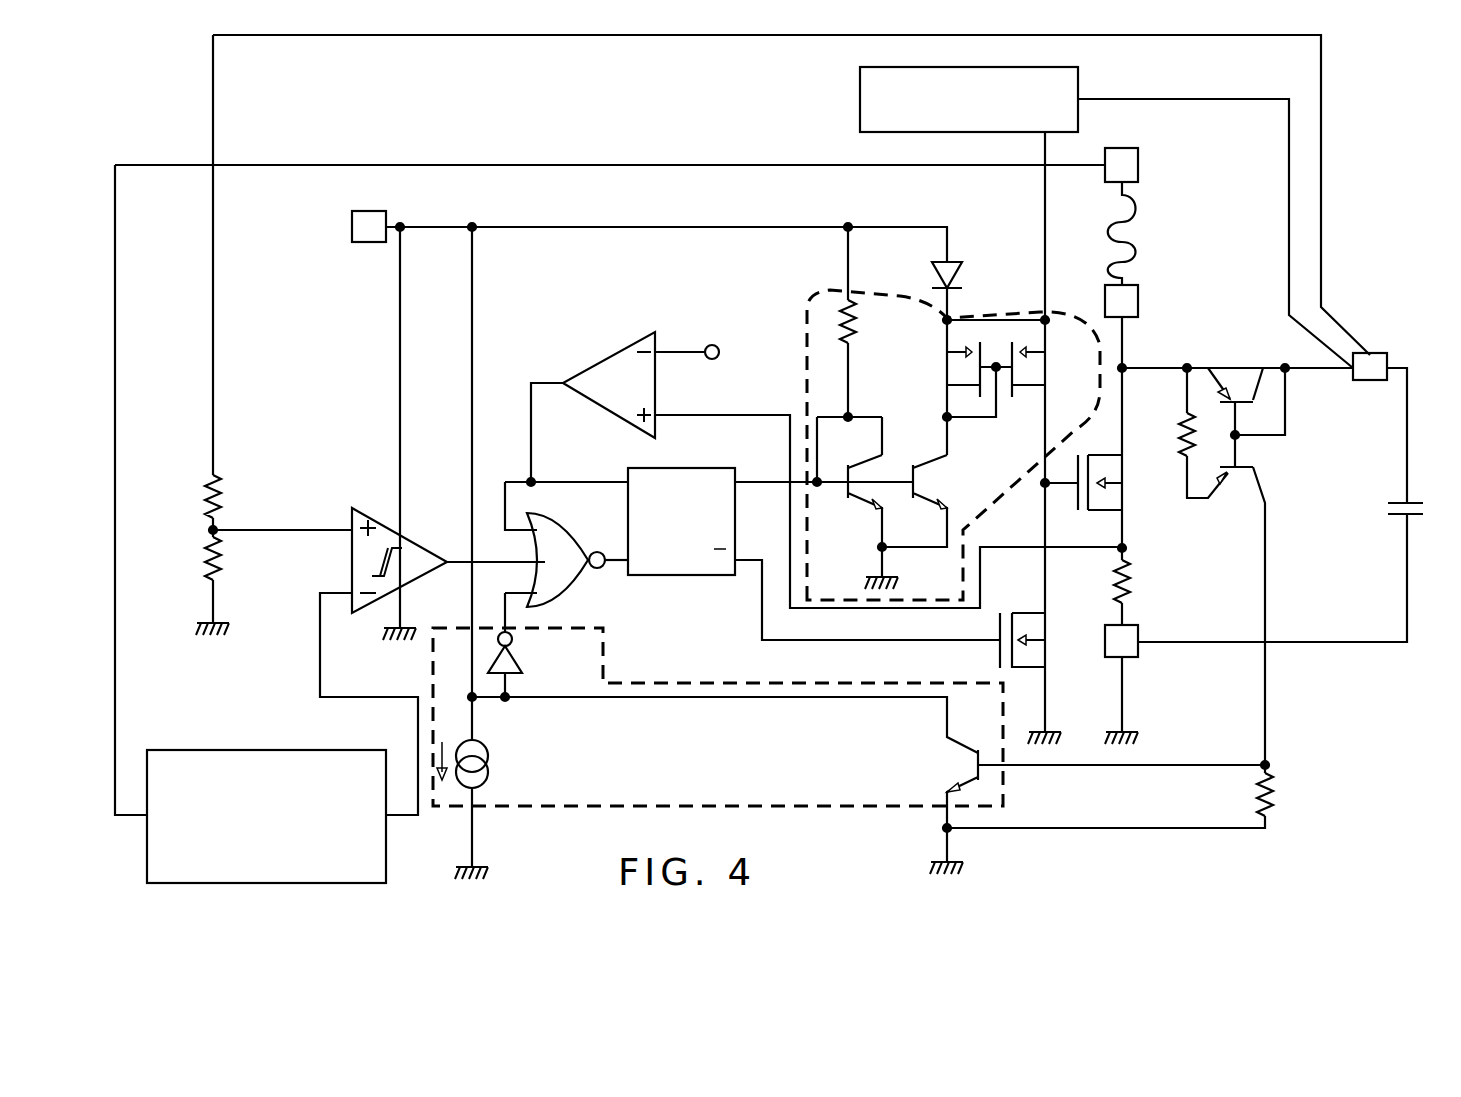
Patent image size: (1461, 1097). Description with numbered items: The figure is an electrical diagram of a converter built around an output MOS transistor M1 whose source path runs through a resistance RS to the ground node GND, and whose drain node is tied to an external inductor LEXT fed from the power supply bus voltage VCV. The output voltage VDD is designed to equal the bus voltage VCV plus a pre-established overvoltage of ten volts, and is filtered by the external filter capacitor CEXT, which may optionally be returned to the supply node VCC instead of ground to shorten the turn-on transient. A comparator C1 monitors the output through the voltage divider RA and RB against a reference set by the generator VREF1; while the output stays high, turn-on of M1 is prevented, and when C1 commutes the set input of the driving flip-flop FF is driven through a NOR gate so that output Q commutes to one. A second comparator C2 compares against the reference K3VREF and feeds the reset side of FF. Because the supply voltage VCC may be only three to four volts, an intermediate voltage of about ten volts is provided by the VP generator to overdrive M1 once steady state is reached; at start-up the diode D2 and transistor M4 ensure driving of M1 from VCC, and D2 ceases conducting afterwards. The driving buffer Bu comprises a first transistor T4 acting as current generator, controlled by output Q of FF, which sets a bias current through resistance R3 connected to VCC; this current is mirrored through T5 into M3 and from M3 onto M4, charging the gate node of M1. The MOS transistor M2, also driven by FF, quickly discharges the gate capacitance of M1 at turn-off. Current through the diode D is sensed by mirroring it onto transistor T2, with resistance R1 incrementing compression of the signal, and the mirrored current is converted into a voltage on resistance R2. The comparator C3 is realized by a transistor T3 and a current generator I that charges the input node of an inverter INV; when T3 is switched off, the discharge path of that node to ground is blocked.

The supply voltage VCC is at (329, 230).
The VP generator VP is at (1106, 217).
The power supply bus voltage VCV is at (1161, 165).
The inductor LEXT is at (1163, 275).
The output voltage VDD is at (1402, 392).
The external filter capacitor CEXT is at (1280, 572).
The ground node GND is at (1164, 684).
The voltage divider resistor RA is at (239, 505).
The voltage divider resistor RB is at (234, 586).
The comparator C1 is at (382, 520).
The comparator C2 is at (604, 358).
The reference voltage K3VREF is at (721, 293).
The NOR gate NOR is at (566, 544).
The inverter INV is at (526, 645).
The driving flip-flop FF is at (814, 554).
The resistance R3 is at (863, 354).
The first transistor T4 is at (859, 522).
The transistor T5 is at (914, 481).
The diode D2 is at (973, 332).
The transistor M3 is at (947, 379).
The transistor M4 is at (1049, 369).
The output transistor M1 is at (1081, 457).
The resistance RS is at (1147, 586).
The resistance R1 is at (1180, 433).
The diode D is at (1246, 397).
The transistor T2 is at (1262, 616).
The MOS transistor M2 is at (996, 650).
The transistor T3 is at (1097, 784).
The resistance R2 is at (1133, 795).
The current generator I is at (474, 788).
The reference voltage generator VREF1 is at (266, 816).
The comparator C3 is at (690, 784).
The driving buffer Bu is at (798, 391).